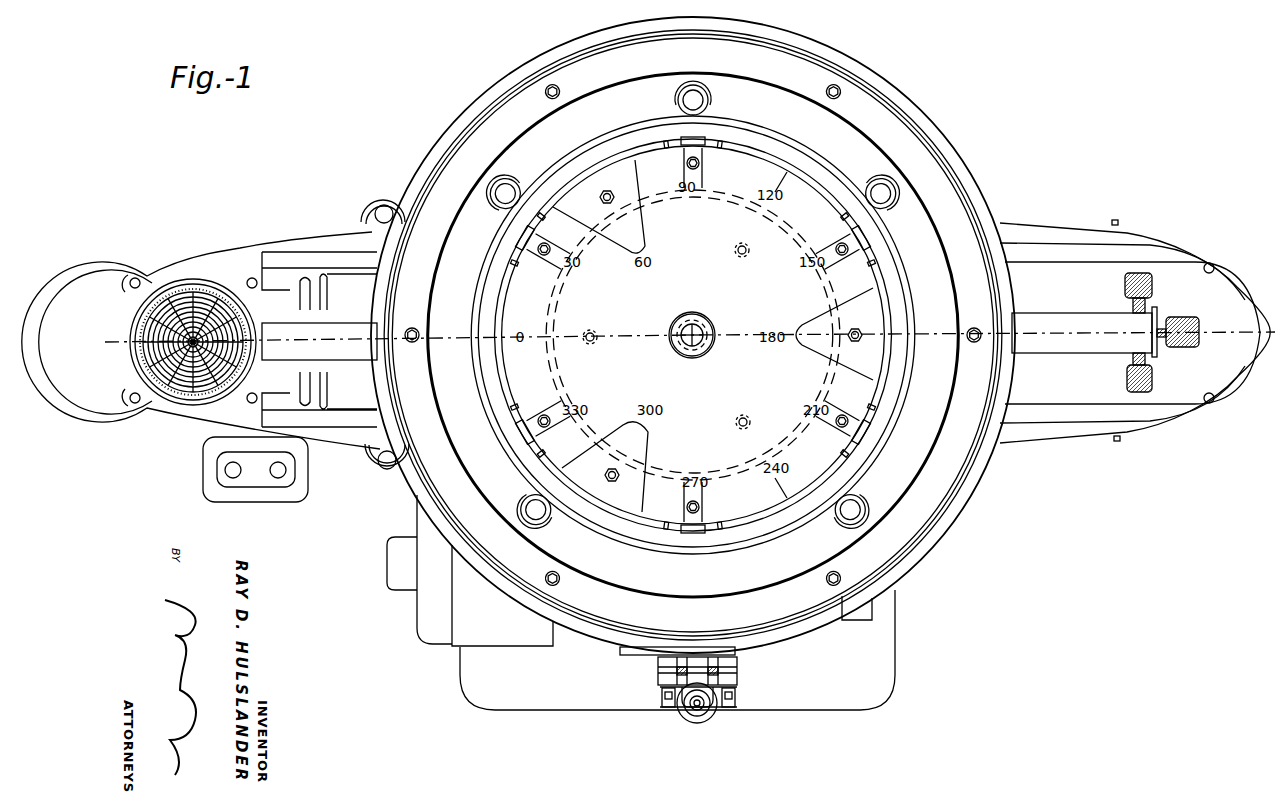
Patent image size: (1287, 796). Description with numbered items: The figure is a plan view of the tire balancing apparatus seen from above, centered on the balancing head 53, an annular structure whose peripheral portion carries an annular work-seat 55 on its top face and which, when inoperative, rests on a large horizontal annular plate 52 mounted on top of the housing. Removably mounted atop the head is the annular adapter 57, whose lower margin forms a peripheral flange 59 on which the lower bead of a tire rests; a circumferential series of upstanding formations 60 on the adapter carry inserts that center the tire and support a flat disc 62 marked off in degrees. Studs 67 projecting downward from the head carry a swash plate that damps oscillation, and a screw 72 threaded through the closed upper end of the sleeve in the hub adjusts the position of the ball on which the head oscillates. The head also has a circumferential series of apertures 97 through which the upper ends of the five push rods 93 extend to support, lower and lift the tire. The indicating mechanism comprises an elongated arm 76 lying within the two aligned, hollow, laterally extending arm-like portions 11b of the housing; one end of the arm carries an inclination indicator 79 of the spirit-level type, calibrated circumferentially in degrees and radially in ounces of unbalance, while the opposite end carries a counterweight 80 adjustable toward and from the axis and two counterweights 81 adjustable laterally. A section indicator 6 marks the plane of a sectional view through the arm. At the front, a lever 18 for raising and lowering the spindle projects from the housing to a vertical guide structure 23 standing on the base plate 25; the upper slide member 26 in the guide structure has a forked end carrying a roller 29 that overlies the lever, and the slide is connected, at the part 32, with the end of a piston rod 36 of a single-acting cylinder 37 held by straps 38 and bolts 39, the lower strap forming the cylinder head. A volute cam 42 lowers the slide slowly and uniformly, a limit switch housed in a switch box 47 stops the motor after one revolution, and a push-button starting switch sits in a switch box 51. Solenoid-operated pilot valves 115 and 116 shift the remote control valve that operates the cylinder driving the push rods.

The section line 6- 6 is at (107, 335).
The arm-like portions 11b is at (322, 237).
The lever 18 is at (702, 657).
The vertical guide structure 23 is at (738, 677).
The base plate 25 is at (495, 690).
The upper slide member 26 is at (672, 670).
The roller 29 is at (712, 668).
The clamp 32 is at (678, 705).
The piston rod 36 is at (712, 708).
The fluid pressure operated cylinder 37 is at (690, 712).
The straps 38 is at (697, 723).
The bolts 39 is at (662, 702).
The volute cam 42 is at (620, 651).
The switch box 47 is at (873, 604).
The switch box 51 is at (203, 465).
The annular plate 52 is at (942, 132).
The balancing head 53 is at (915, 455).
The annular plate or work-seat 55 is at (930, 492).
The annular adapter 57 is at (876, 352).
The peripheral flange 59 is at (812, 167).
The upstanding formations 60 is at (522, 242).
The flat plate or disc 62 is at (613, 258).
The studs 67 is at (597, 332).
The screw 72 is at (706, 330).
The elongated arm 76 is at (352, 328).
The inclination indicator 79 is at (180, 290).
The counterweight 80 is at (1185, 345).
The counterweights 81 is at (1143, 275).
The push rods 93 is at (676, 102).
The apertures 97 is at (703, 103).
The pilot valve 115 is at (383, 200).
The pilot valve 116 is at (386, 474).